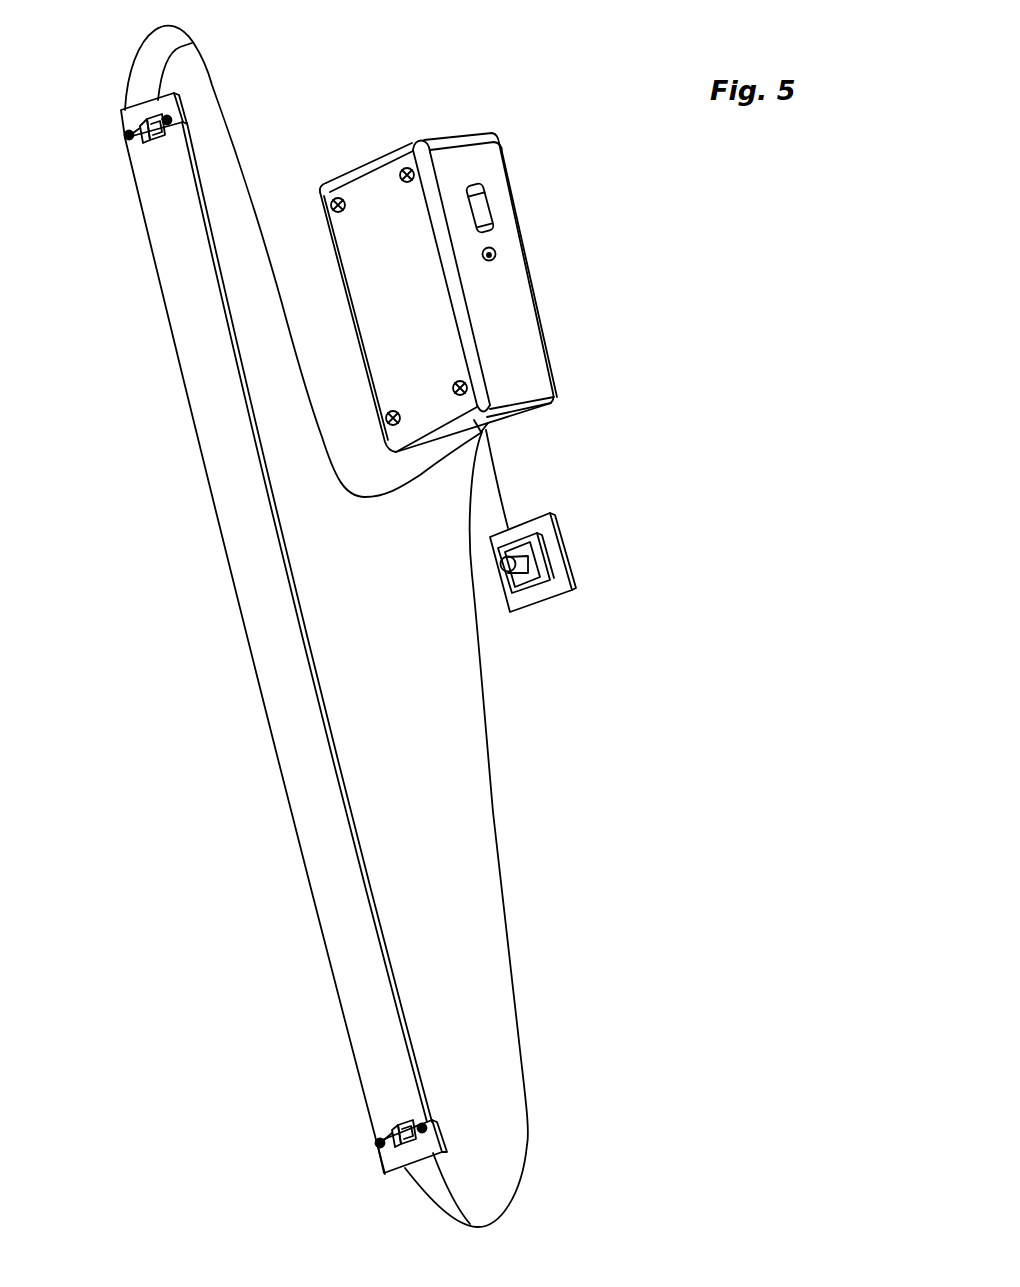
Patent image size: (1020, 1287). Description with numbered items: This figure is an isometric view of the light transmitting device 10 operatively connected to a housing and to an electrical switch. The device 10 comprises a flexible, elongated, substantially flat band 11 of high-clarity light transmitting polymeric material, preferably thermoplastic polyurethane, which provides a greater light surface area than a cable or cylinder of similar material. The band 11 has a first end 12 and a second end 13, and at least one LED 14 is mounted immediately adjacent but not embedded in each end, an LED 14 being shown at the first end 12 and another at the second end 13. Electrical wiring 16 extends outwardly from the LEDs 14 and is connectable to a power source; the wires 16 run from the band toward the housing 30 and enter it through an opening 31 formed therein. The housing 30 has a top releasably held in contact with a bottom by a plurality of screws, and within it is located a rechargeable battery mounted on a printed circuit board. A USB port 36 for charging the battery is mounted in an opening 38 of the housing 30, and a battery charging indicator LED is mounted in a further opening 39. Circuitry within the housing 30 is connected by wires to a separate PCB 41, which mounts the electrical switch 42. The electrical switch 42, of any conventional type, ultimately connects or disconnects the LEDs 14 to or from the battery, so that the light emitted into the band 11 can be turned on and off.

The light transmitting device 10 is at (326, 614).
The band 11 is at (228, 505).
The first end 12 is at (101, 96).
The second end 13 is at (350, 1151).
The LED 14 is at (140, 130).
The electrical wiring 16 is at (155, 33).
The housing 30 is at (490, 317).
The opening 31 is at (485, 428).
The USB port 36 is at (482, 190).
The opening 38 is at (474, 190).
The opening 39 is at (493, 253).
The PCB 41 is at (563, 581).
The electrical switch 42 is at (522, 566).